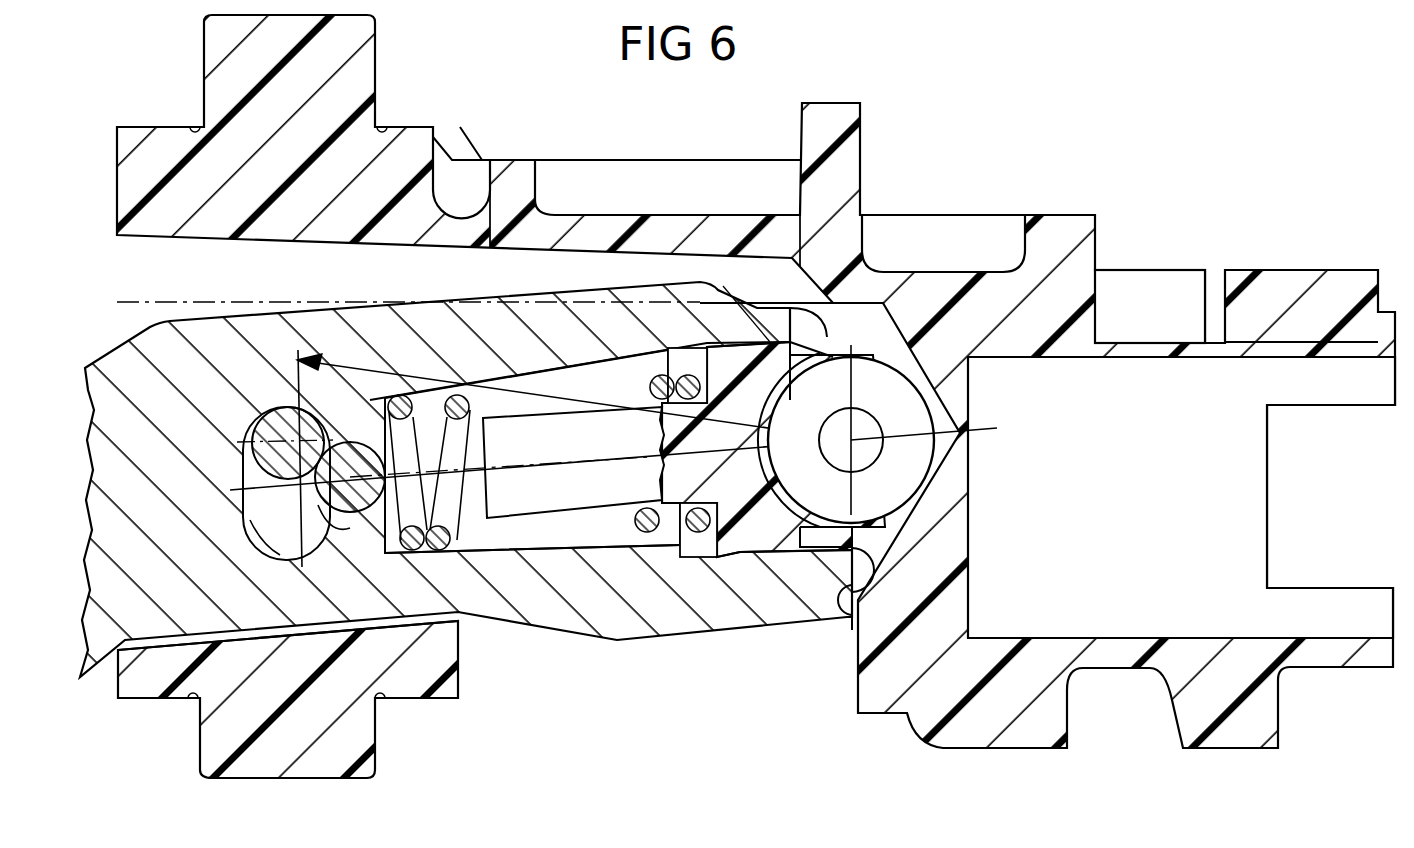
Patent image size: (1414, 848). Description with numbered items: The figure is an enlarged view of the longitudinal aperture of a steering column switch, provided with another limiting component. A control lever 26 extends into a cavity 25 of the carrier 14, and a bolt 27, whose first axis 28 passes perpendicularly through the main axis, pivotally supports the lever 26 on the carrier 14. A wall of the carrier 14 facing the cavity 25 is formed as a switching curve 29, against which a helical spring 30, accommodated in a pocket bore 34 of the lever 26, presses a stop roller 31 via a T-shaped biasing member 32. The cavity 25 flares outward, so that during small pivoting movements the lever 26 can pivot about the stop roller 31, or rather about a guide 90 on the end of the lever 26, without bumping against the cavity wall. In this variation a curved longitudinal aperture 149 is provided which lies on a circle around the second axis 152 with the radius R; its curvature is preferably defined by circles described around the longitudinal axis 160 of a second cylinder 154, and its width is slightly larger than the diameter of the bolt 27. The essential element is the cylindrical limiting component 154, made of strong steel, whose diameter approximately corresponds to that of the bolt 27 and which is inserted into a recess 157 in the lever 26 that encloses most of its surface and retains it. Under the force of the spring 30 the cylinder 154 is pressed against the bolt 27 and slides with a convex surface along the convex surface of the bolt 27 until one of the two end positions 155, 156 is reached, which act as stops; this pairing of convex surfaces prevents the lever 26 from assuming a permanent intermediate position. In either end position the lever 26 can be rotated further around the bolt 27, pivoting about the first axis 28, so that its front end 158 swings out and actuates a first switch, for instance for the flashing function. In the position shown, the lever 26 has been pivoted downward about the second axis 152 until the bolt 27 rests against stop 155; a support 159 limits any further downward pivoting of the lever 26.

The carrier 14 is at (400, 165).
The cavity 25 is at (203, 268).
The pocket bore 34 is at (463, 373).
The T-shaped biasing member 32 is at (558, 295).
The lever 26 is at (645, 307).
The guide 90 is at (797, 373).
The stop roller 31 is at (868, 380).
The second axis 152 is at (865, 425).
The radius R is at (358, 368).
The end position 155 is at (288, 410).
The recess 157 is at (350, 445).
The first axis 28 is at (280, 445).
The bolt 27 is at (265, 460).
The curved longitudinal aperture 149 is at (270, 540).
The end position 156 is at (293, 560).
The longitudinal axis 160 is at (348, 513).
The cylindrical limiting component 154 is at (362, 500).
The helical spring 30 is at (440, 540).
The front end 158 is at (717, 613).
The switching curve 29 is at (850, 585).
The support 159 is at (145, 660).